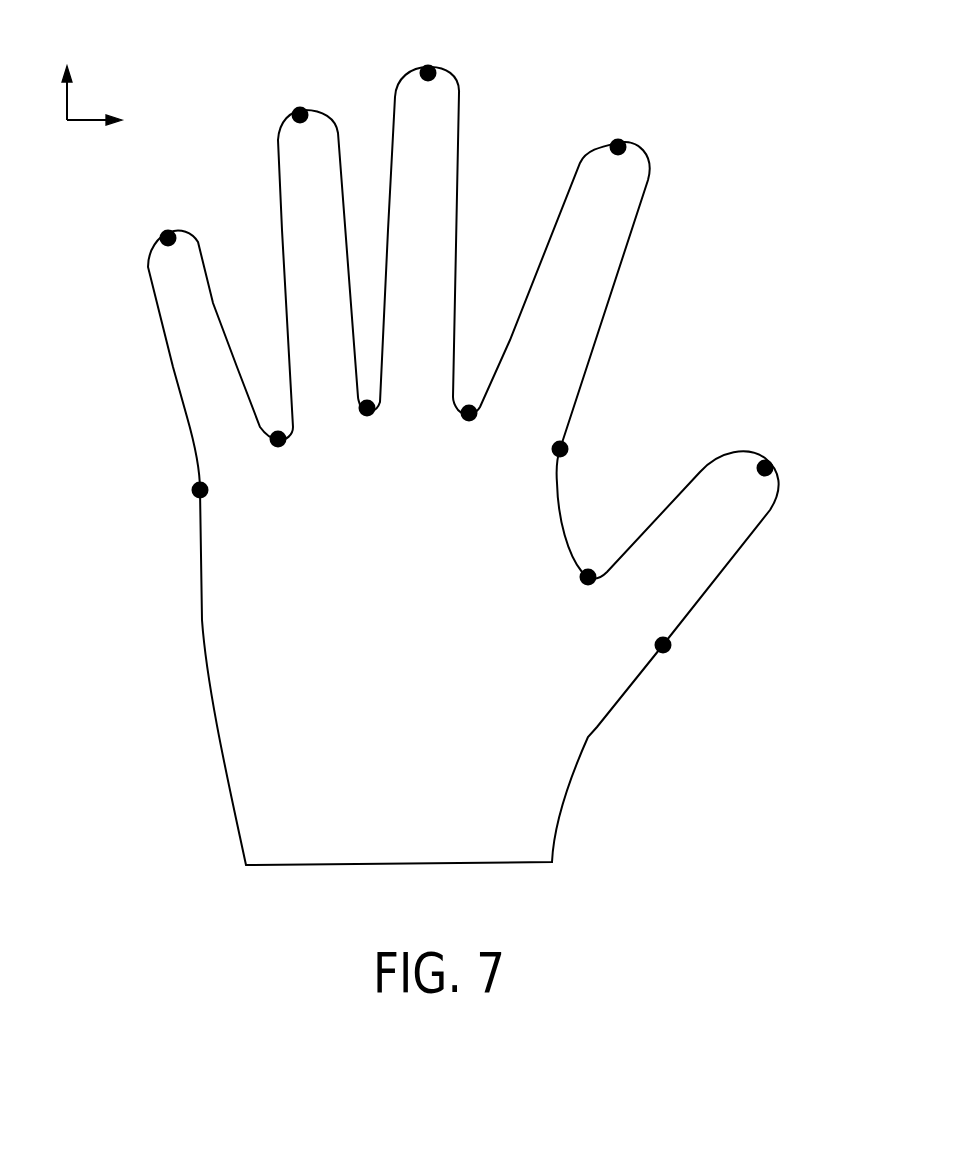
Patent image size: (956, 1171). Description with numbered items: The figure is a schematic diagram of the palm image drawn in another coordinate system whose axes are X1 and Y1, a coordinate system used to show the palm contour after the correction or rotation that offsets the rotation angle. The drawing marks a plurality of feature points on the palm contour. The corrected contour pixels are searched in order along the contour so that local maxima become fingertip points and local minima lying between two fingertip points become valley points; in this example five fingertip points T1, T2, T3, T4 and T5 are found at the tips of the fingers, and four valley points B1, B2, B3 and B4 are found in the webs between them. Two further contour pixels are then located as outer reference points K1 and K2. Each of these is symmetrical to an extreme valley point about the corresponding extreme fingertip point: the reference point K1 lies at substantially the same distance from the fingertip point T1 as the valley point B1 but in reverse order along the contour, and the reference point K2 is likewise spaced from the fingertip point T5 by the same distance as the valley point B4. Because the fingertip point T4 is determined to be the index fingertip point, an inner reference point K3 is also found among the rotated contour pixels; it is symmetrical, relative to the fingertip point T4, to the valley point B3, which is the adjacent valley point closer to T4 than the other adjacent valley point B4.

The X axis of the other coordinate system X1 is at (112, 118).
The Y axis of the other coordinate system Y1 is at (64, 73).
The fingertip point T1 is at (161, 220).
The fingertip point T2 is at (299, 93).
The fingertip point T3 is at (426, 53).
The index fingertip point T4 is at (622, 125).
The fingertip point T5 is at (781, 451).
The valley point B1 is at (287, 461).
The valley point B2 is at (369, 430).
The valley point B3 is at (475, 438).
The valley point B4 is at (593, 597).
The outer reference point K1 is at (176, 477).
The outer reference point K2 is at (680, 661).
The inner reference point K3 is at (581, 448).